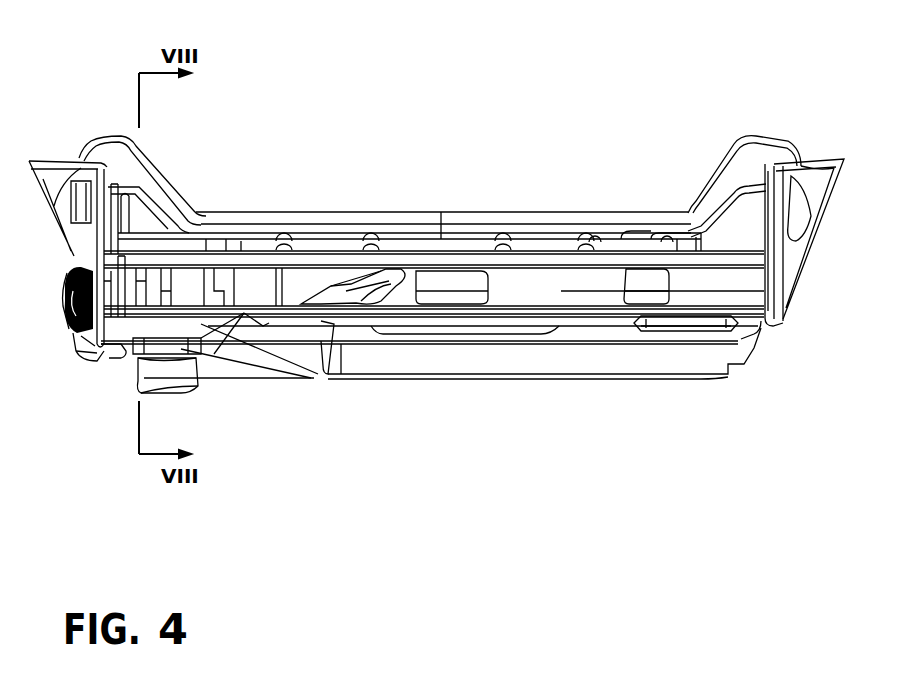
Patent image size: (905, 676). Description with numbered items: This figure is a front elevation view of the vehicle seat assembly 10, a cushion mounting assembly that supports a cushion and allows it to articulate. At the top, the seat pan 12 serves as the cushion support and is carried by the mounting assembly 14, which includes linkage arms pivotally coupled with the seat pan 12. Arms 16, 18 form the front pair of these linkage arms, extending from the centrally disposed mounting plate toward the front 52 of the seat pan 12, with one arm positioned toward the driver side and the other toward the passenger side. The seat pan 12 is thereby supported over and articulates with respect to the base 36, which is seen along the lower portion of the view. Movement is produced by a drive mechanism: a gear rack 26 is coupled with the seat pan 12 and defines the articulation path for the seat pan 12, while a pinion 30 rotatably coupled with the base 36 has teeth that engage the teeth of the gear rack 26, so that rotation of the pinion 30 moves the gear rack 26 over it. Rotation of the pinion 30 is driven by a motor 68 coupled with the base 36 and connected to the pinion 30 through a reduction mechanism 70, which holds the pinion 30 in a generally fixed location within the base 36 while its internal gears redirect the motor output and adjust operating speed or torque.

The vehicle seat assembly 10 is at (638, 108).
The seat pan 12 is at (780, 137).
The mounting assembly 14 is at (247, 290).
The linkage arm 16 is at (668, 245).
The linkage arm 18 is at (207, 287).
The gear rack 26 is at (140, 290).
The pinion 30 is at (128, 308).
The base 36 is at (689, 352).
The front 52 is at (830, 172).
The motor 68 is at (72, 308).
The reduction mechanism 70 is at (78, 362).